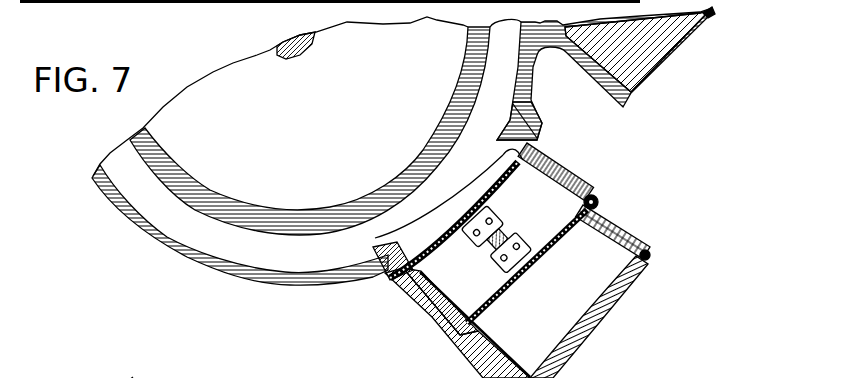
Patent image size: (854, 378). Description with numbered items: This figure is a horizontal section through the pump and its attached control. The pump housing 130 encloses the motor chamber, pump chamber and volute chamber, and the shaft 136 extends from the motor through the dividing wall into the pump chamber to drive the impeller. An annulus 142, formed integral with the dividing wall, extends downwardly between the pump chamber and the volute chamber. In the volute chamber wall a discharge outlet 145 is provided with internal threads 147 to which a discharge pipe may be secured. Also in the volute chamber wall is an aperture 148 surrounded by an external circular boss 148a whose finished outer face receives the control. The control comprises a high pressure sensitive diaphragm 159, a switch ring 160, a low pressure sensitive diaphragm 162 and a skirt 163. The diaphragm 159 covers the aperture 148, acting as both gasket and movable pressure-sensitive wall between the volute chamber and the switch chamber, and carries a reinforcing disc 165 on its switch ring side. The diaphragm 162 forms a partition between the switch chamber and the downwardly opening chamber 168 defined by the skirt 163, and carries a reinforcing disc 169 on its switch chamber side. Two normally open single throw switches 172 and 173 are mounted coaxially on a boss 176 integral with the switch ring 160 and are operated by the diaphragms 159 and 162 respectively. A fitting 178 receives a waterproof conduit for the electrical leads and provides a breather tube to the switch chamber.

The housing 130 is at (125, 218).
The shaft 136 is at (314, 46).
The annulus 142 is at (402, 176).
The discharge outlet 145 is at (713, 11).
The internal threads 147 is at (662, 66).
The aperture 148 is at (430, 227).
The external circular boss 148a is at (535, 129).
The high pressure sensitive diaphragm 159 is at (542, 144).
The switch ring 160 is at (570, 164).
The low pressure sensitive diaphragm 162 is at (597, 200).
The skirt 163 is at (630, 221).
The reinforcing disc 165 is at (497, 190).
The chamber 168 is at (610, 279).
The reinforcing disc 169 is at (497, 286).
The switch 172 is at (490, 213).
The switch 173 is at (518, 243).
The boss 176 is at (505, 228).
The fitting 178 is at (145, 372).